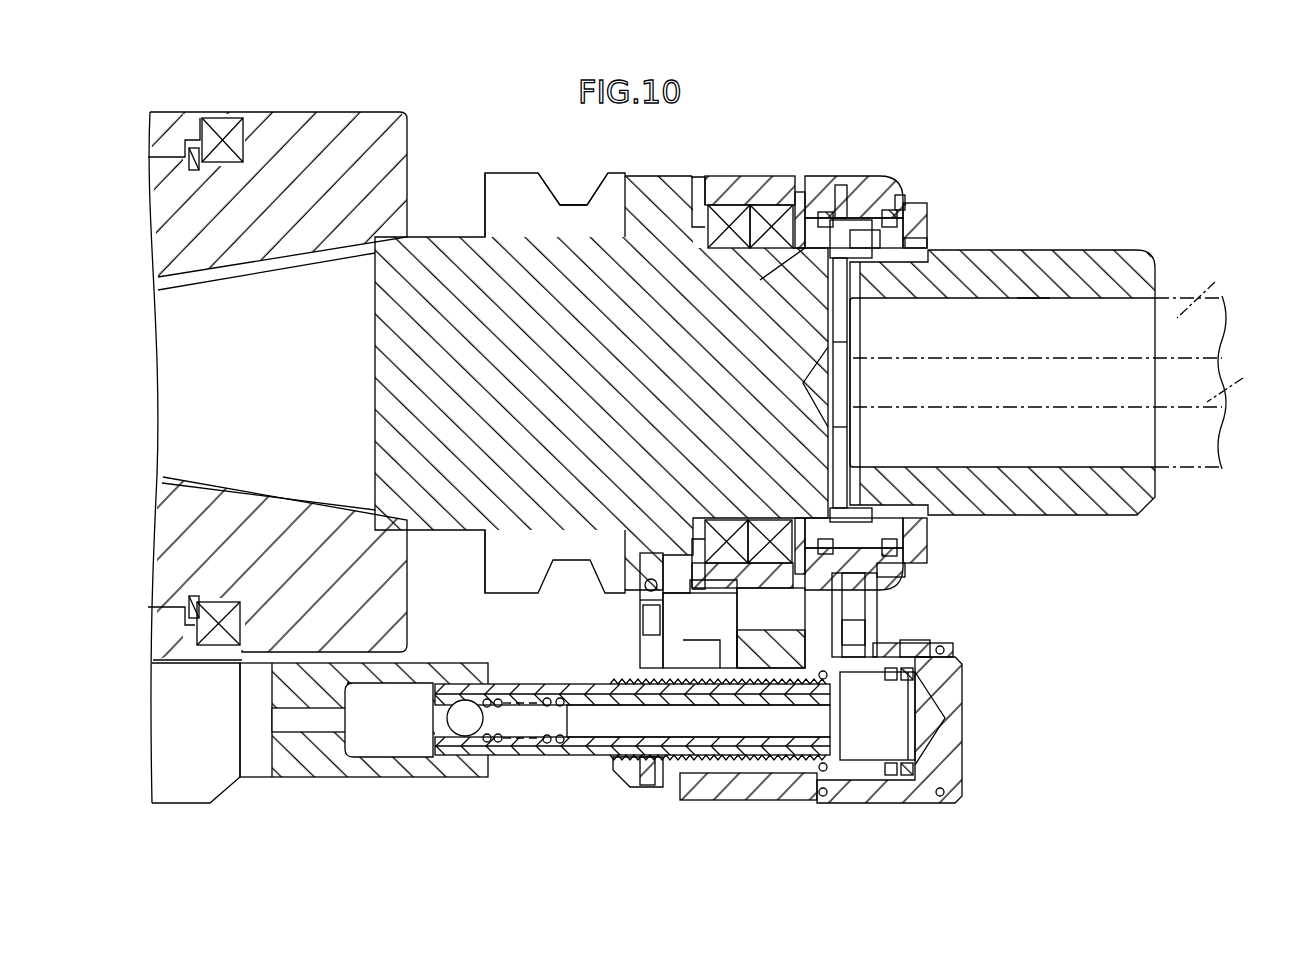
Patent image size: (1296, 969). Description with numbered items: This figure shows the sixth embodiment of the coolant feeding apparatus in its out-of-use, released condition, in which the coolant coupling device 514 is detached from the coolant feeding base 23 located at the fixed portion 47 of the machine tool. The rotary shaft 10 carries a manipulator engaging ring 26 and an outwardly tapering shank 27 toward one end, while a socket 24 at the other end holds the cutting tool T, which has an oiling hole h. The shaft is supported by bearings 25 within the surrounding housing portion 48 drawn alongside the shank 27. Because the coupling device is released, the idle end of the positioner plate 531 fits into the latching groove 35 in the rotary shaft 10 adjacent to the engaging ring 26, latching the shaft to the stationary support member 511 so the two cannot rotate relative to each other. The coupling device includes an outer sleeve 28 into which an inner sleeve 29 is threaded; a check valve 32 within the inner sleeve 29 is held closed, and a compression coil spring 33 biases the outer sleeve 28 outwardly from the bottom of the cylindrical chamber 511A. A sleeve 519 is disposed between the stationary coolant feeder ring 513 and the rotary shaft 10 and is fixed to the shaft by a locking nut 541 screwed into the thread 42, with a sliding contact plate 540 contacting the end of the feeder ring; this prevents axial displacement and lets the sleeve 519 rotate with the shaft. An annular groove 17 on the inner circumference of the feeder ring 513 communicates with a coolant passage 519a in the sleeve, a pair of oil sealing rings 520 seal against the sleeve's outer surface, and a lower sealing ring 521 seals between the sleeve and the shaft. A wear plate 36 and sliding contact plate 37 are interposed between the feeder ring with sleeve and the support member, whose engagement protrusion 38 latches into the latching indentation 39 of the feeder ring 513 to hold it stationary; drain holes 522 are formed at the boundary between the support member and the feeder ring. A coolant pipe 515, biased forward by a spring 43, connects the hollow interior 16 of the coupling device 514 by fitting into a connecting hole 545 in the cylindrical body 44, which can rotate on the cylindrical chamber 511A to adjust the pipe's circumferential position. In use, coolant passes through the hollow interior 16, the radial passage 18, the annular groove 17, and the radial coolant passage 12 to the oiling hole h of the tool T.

The rotary shaft 10 is at (537, 270).
The radial coolant passage 12 is at (849, 285).
The hollow interior 16 is at (637, 712).
The annular groove 17 is at (905, 200).
The radial passage 18 is at (853, 602).
The coolant feeding base 23 is at (393, 782).
The socket 24 is at (1107, 285).
The bearing 25 is at (768, 213).
The manipulator engaging ring 26 is at (558, 203).
The shank 27 is at (407, 217).
The outer sleeve 28 is at (680, 773).
The inner sleeve 29 is at (550, 758).
The check valve 32 is at (457, 718).
The compression coil spring 33 is at (912, 770).
The latching groove 35 is at (637, 597).
The wear plate 36 is at (807, 190).
The sliding contact plate 37 is at (837, 180).
The engagement protrusion 38 is at (805, 600).
The latching indentation 39 is at (740, 622).
The thread 42 is at (1017, 300).
The spring 43 is at (903, 572).
The cylindrical body 44 is at (947, 643).
The fixed portion 47 is at (222, 765).
The housing lower part 48 is at (362, 627).
The stationary support member 511 is at (707, 173).
The cylindrical chamber 511A is at (940, 755).
The stationary coolant feeder ring 513 is at (900, 195).
The coolant coupling device 514 is at (747, 810).
The coolant pipe 515 is at (850, 627).
The sleeve 519 is at (960, 270).
The coolant passage 519a is at (870, 275).
The oil sealing rings 520 is at (863, 197).
The lower sealing ring 521 is at (807, 250).
The drain hole 522 is at (810, 180).
The positioner plate 531 is at (650, 620).
The sliding contact plate 540 is at (927, 222).
The locking nut 541 is at (927, 243).
The connecting hole 545 is at (925, 643).
The cutting tool T is at (1206, 289).
The oiling hole h is at (1236, 374).